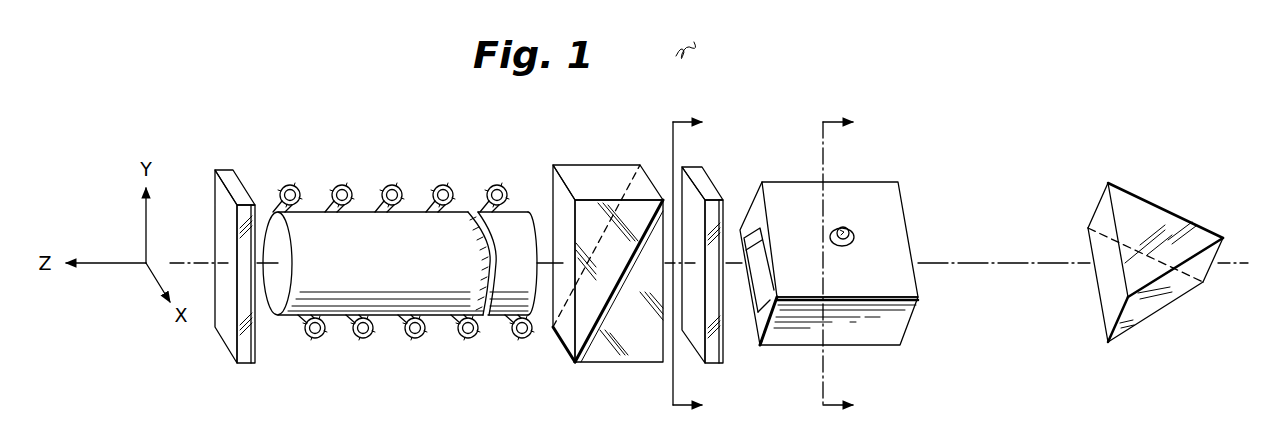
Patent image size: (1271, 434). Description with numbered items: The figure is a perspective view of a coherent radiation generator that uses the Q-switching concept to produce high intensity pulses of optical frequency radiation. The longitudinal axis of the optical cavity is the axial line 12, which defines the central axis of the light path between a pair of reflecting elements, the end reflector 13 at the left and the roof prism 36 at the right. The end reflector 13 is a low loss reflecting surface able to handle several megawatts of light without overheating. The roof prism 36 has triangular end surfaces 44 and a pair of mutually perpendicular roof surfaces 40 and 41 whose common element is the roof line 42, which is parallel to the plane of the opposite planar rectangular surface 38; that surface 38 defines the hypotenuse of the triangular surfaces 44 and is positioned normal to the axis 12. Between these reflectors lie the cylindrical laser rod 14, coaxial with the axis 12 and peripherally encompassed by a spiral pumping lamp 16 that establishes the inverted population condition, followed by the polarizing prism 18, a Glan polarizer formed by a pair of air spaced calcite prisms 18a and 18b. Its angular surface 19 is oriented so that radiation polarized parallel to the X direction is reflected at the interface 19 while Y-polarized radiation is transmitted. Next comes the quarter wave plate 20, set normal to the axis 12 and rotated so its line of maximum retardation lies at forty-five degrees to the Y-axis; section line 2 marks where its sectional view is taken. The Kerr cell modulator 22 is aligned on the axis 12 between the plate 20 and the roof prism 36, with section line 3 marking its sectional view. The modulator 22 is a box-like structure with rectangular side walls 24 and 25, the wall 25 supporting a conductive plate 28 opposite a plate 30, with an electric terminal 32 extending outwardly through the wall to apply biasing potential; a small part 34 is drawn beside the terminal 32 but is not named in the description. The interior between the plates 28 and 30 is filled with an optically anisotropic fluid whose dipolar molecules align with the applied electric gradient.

The section line 2- 2 is at (697, 262).
The section line 3- 3 is at (849, 262).
The axial line 12 is at (182, 262).
The end reflector 13 is at (219, 171).
The cylindrical laser rod 14 is at (415, 210).
The pumping lamp 16 is at (500, 185).
The polarizing prism 18 is at (599, 253).
The calcite prism 18a is at (606, 366).
The calcite prism 18b is at (596, 165).
The angular surface 19 is at (577, 359).
The quarter wave plate 20 is at (690, 166).
The Kerr cell modulator 22 is at (833, 256).
The side wall 24 is at (888, 341).
The side wall 25 is at (846, 182).
The conductive plate 28 is at (758, 206).
The conductive plate 30 is at (760, 310).
The electric terminal 32 is at (850, 231).
The terminal base 34 is at (850, 244).
The roof prism 36 is at (1148, 246).
The planar rectangular surface 38 is at (1106, 183).
The roof surface 40 is at (1185, 286).
The roof surface 41 is at (1097, 212).
The roof line 42 is at (1226, 243).
The triangular end surface 44 is at (1126, 200).